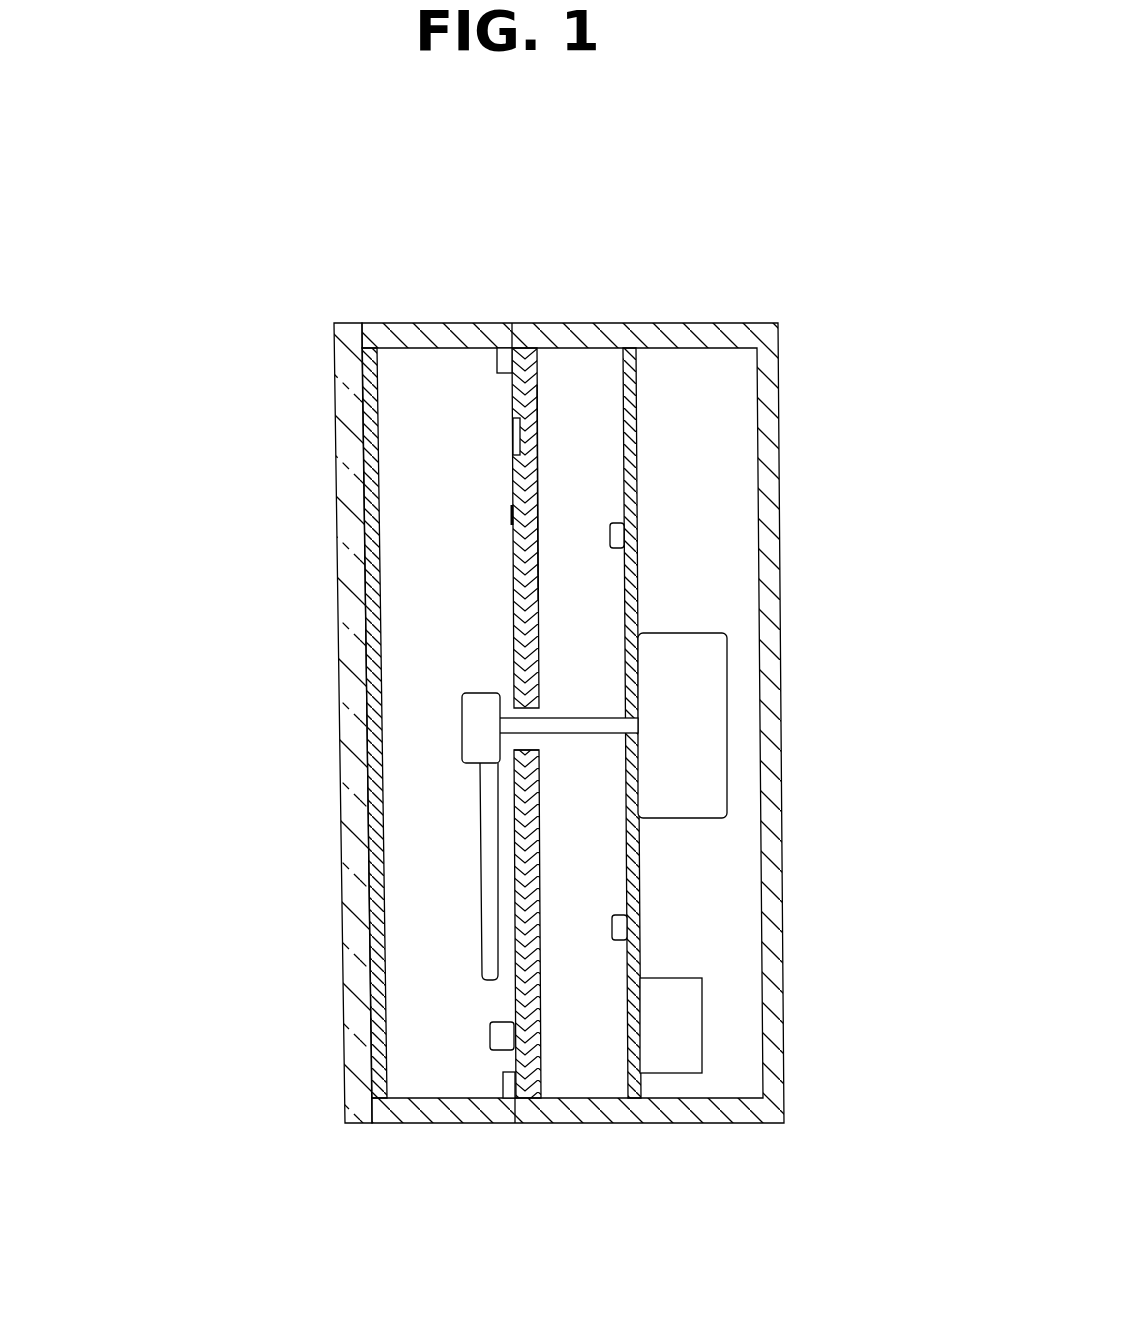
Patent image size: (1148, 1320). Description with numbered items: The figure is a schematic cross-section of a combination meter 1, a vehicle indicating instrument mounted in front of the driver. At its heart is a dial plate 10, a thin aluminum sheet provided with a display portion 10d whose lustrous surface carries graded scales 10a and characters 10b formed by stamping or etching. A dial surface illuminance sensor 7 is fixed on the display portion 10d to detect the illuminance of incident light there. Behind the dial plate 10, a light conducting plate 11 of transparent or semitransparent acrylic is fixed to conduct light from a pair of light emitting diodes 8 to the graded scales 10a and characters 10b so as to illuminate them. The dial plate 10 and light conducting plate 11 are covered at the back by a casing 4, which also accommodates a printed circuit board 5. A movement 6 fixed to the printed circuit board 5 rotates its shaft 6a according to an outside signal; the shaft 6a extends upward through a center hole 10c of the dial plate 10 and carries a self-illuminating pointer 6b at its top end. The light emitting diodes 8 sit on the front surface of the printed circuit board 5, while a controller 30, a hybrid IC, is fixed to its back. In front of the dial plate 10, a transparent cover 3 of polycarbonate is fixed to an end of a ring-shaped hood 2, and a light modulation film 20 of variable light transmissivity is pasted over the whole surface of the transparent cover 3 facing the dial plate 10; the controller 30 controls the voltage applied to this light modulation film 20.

The combination meter 1 is at (160, 270).
The ring-shaped hood 2 is at (442, 1123).
The transparent cover 3 is at (336, 366).
The casing 4 is at (719, 1123).
The printed circuit board 5 is at (641, 881).
The movement 6 is at (727, 700).
The shaft 6a is at (595, 736).
The pointer 6b is at (481, 826).
The dial surface illuminance sensor 7 is at (491, 1038).
The light emitting diodes 8 is at (610, 523).
The dial plate 10 is at (548, 656).
The graded scales 10a is at (510, 437).
The characters 10b is at (511, 473).
The center hole 10c is at (517, 745).
The display portion 10d is at (510, 515).
The light conducting plate 11 is at (512, 598).
The light modulation film 20 is at (366, 437).
The controller 30 is at (702, 1032).